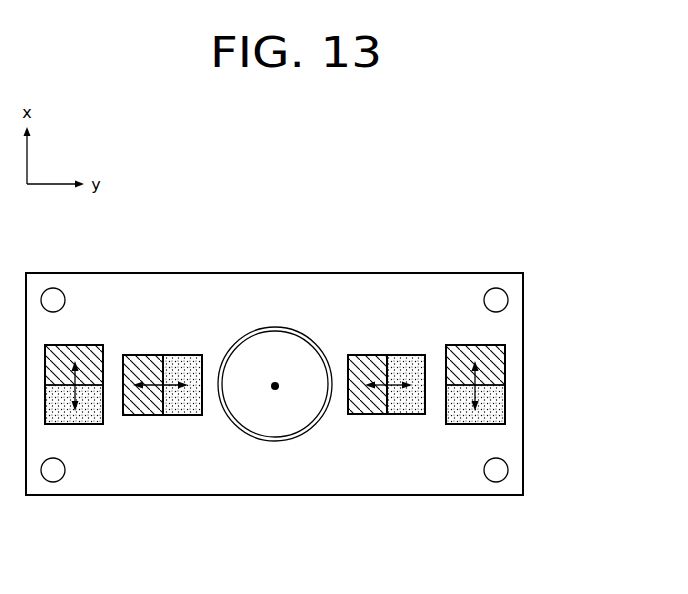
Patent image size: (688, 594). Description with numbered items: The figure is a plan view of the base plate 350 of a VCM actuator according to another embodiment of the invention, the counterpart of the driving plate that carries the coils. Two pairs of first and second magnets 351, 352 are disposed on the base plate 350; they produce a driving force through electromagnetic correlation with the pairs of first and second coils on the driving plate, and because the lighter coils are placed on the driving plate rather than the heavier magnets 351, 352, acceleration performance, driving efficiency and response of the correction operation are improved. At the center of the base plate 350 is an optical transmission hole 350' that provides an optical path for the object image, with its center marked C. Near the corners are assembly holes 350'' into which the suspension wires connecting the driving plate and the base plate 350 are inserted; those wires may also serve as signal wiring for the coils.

The base plate 350 is at (274, 358).
The optical transmission hole 350' is at (275, 333).
The assembly holes 350'' is at (339, 385).
The first magnets 351 is at (177, 415).
The second magnets 352 is at (92, 424).
The center point C is at (275, 388).